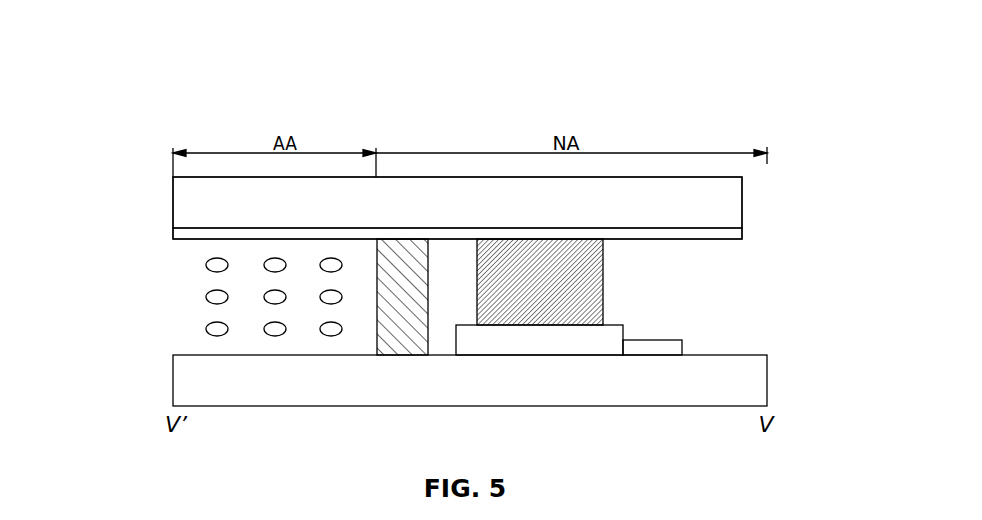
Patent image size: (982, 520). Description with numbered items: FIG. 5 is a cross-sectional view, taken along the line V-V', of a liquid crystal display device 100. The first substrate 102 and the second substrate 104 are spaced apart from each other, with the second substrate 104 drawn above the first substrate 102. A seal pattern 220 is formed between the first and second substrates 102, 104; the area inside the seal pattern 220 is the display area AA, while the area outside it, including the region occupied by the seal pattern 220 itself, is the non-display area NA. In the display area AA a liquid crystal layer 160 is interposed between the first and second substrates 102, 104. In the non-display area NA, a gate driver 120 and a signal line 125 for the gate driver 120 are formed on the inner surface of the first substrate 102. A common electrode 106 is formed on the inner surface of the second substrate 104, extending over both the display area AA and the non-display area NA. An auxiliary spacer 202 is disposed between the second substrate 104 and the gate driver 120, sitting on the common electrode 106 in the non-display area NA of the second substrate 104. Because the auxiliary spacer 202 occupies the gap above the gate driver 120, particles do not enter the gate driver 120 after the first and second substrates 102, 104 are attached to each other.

The display device 100 is at (483, 141).
The second substrate 104 is at (675, 183).
The common electrode 106 is at (739, 232).
The first substrate 102 is at (757, 381).
The seal pattern 220 is at (395, 349).
The auxiliary spacer 202 is at (591, 274).
The gate driver 120 is at (533, 347).
The signal line 125 is at (677, 344).
The liquid crystal layer 160 is at (207, 329).